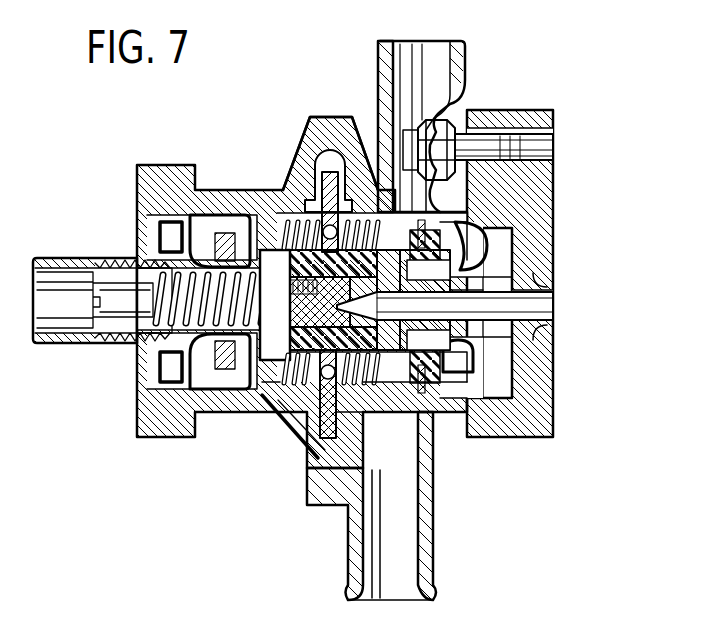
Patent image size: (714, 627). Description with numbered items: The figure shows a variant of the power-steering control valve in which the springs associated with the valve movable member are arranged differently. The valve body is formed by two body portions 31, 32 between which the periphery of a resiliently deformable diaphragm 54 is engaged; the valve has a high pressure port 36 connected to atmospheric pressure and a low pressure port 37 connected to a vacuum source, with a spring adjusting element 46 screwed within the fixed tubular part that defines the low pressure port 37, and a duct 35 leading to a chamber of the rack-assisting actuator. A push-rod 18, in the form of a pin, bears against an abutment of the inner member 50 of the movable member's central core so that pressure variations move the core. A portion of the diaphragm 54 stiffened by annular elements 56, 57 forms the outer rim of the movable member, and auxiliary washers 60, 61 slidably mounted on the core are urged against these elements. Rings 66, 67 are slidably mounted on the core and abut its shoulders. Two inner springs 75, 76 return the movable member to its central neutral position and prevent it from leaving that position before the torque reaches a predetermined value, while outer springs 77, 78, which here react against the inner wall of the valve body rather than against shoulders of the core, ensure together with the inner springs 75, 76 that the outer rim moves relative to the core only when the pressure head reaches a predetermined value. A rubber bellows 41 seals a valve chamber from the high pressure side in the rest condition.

The push-rod 18 is at (542, 305).
The valve body portion 31 is at (220, 200).
The valve body portion 32 is at (448, 403).
The duct 35 is at (402, 509).
The high pressure port 36 is at (440, 60).
The low pressure port 37 is at (45, 286).
The rubber bellows 41 is at (200, 220).
The spring adjusting element 46 is at (115, 338).
The inner member 50 is at (458, 318).
The resiliently deformable diaphragm 54 is at (316, 152).
The annular element 56 is at (325, 425).
The annular element 57 is at (340, 405).
The auxiliary washer 60 is at (305, 410).
The auxiliary washer 61 is at (335, 400).
The ring 66 is at (242, 215).
The ring 67 is at (468, 288).
The inner spring 75 is at (278, 215).
The inner spring 76 is at (383, 178).
The outer spring 77 is at (290, 410).
The outer spring 78 is at (365, 388).